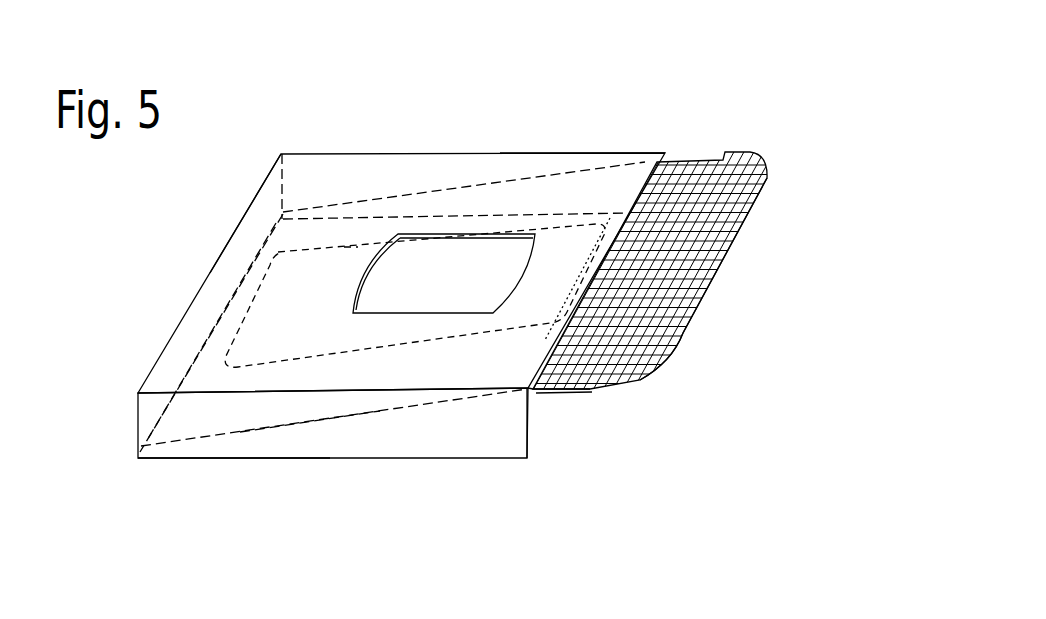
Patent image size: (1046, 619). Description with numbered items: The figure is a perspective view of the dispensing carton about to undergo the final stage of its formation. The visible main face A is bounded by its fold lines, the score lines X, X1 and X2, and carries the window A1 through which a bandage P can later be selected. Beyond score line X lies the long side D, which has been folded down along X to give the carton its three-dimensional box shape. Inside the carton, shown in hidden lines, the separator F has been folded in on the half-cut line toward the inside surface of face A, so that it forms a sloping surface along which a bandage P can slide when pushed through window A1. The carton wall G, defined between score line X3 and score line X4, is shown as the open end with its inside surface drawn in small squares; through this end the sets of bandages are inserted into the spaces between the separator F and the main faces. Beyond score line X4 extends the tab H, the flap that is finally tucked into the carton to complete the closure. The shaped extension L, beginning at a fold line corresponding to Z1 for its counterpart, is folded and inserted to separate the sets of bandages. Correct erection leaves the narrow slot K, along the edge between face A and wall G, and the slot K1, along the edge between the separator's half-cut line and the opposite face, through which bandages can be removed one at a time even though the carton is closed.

The main face A is at (473, 384).
The window A1 is at (470, 298).
The long side D is at (430, 448).
The slot K1 is at (160, 418).
The carton wall G is at (687, 200).
The tab H is at (695, 259).
The score line X2 is at (261, 186).
The bandage P is at (344, 247).
The score line X1 is at (579, 153).
The score line X is at (233, 393).
The separator F is at (313, 422).
The fold line Z1 is at (530, 433).
The shaped extension L is at (533, 422).
The slot K is at (528, 390).
The score line X4 is at (633, 313).